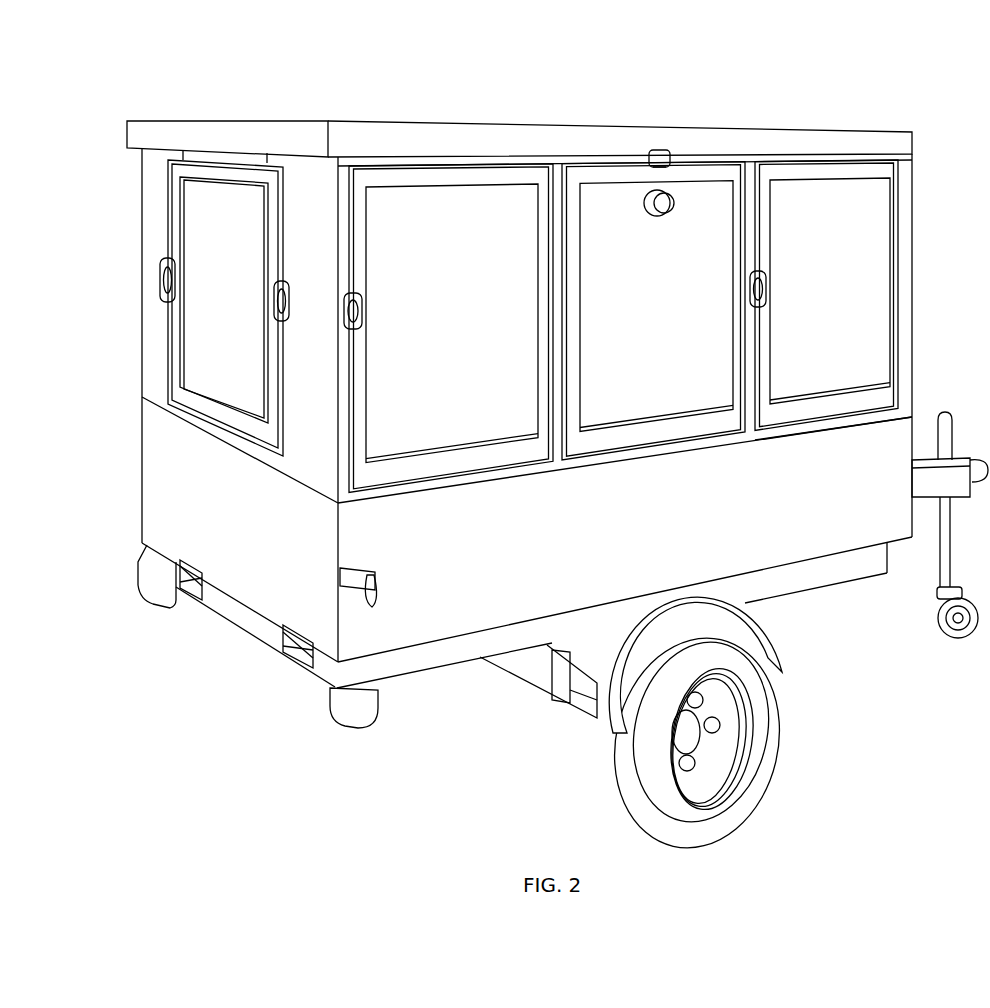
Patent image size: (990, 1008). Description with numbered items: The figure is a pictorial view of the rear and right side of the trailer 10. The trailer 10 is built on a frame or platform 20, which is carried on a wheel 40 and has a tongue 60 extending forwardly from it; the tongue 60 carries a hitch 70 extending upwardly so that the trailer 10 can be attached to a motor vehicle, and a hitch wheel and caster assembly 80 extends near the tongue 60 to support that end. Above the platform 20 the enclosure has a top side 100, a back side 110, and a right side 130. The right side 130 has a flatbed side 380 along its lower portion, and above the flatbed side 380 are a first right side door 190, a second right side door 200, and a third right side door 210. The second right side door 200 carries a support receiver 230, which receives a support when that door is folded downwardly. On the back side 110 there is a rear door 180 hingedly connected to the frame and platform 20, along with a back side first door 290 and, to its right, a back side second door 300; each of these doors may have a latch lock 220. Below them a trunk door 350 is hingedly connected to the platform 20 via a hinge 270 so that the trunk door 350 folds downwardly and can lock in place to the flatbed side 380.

The trailer 10 is at (958, 98).
The platform 20 is at (408, 664).
The wheel 40 is at (738, 750).
The tongue 60 is at (950, 443).
The hitch 70 is at (950, 440).
The hitch wheel and caster assembly 80 is at (972, 592).
The top side 100 is at (558, 104).
The back side 110 is at (262, 490).
The right side 130 is at (831, 443).
The back door 180 is at (228, 308).
The first right side door 190 is at (826, 295).
The second right side door 200 is at (664, 311).
The third right side door 210 is at (451, 328).
The latch lock 220 is at (362, 568).
The support receiver 230 is at (671, 194).
The hinge 270 is at (178, 564).
The back side first door 290 is at (152, 294).
The back side second door 300 is at (331, 312).
The trunk door 350 is at (240, 529).
The flatbed side 380 is at (625, 539).